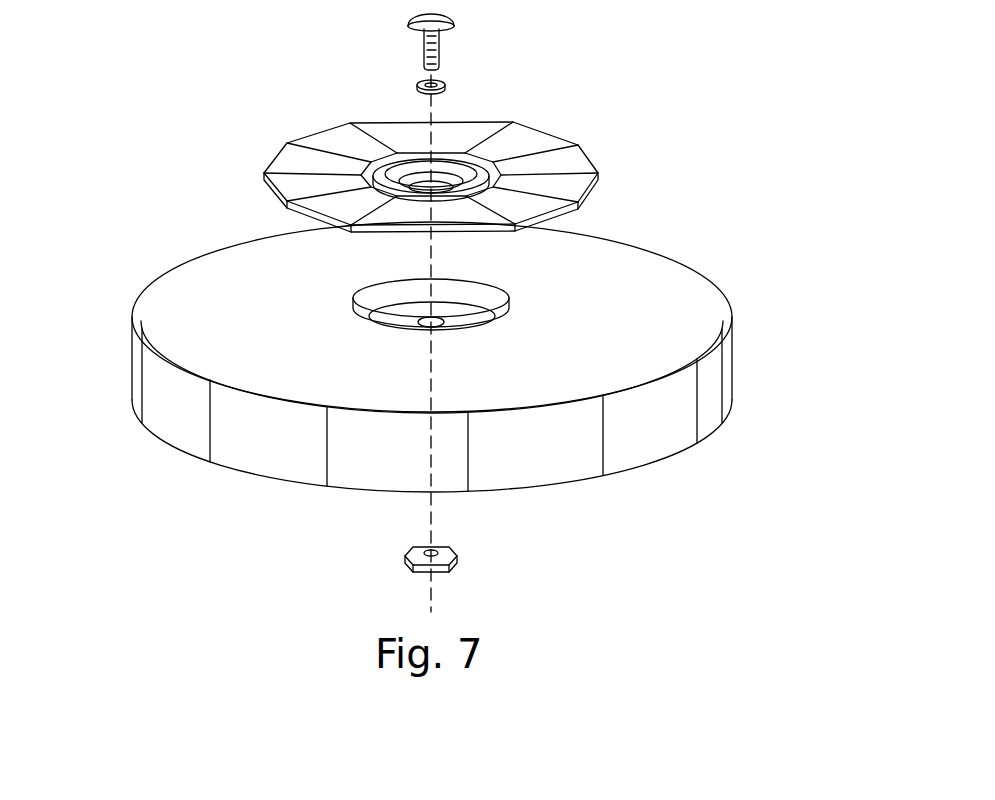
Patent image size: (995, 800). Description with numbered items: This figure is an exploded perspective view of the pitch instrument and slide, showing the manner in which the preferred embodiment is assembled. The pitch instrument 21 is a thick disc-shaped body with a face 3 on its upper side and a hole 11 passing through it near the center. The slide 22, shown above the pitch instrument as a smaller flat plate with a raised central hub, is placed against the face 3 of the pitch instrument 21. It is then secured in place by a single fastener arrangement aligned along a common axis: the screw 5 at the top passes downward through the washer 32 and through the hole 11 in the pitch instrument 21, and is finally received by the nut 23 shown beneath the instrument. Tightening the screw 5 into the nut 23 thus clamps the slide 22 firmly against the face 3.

The screw 5 is at (440, 22).
The washer 32 is at (446, 86).
The slide 22 is at (262, 157).
The pitch instrument 21 is at (475, 329).
The face 3 is at (200, 300).
The hole 11 is at (444, 323).
The nut 23 is at (450, 552).